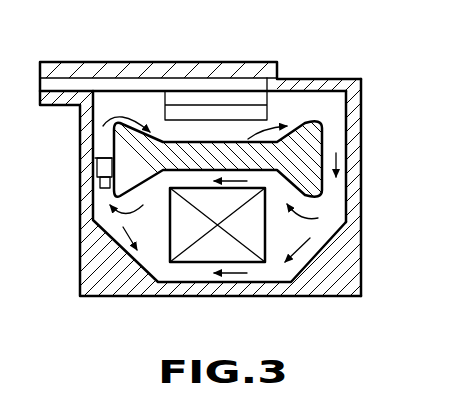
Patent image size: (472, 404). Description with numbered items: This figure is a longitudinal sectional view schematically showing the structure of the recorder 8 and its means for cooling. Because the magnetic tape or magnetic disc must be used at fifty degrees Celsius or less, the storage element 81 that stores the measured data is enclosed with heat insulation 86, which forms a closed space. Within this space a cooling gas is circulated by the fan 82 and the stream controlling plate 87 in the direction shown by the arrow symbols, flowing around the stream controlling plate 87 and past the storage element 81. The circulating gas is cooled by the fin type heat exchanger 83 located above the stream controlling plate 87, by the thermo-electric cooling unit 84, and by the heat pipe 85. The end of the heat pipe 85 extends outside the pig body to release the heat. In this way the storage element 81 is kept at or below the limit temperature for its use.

The recorder 8 is at (368, 256).
The storage element 81 is at (205, 247).
The fan 82 is at (104, 156).
The fin type heat exchanger 83 is at (258, 118).
The thermo-electric cooling unit 84 is at (248, 97).
The heat pipe 85 is at (137, 88).
The heat insulation 86 is at (362, 200).
The stream controlling plate 87 is at (310, 148).